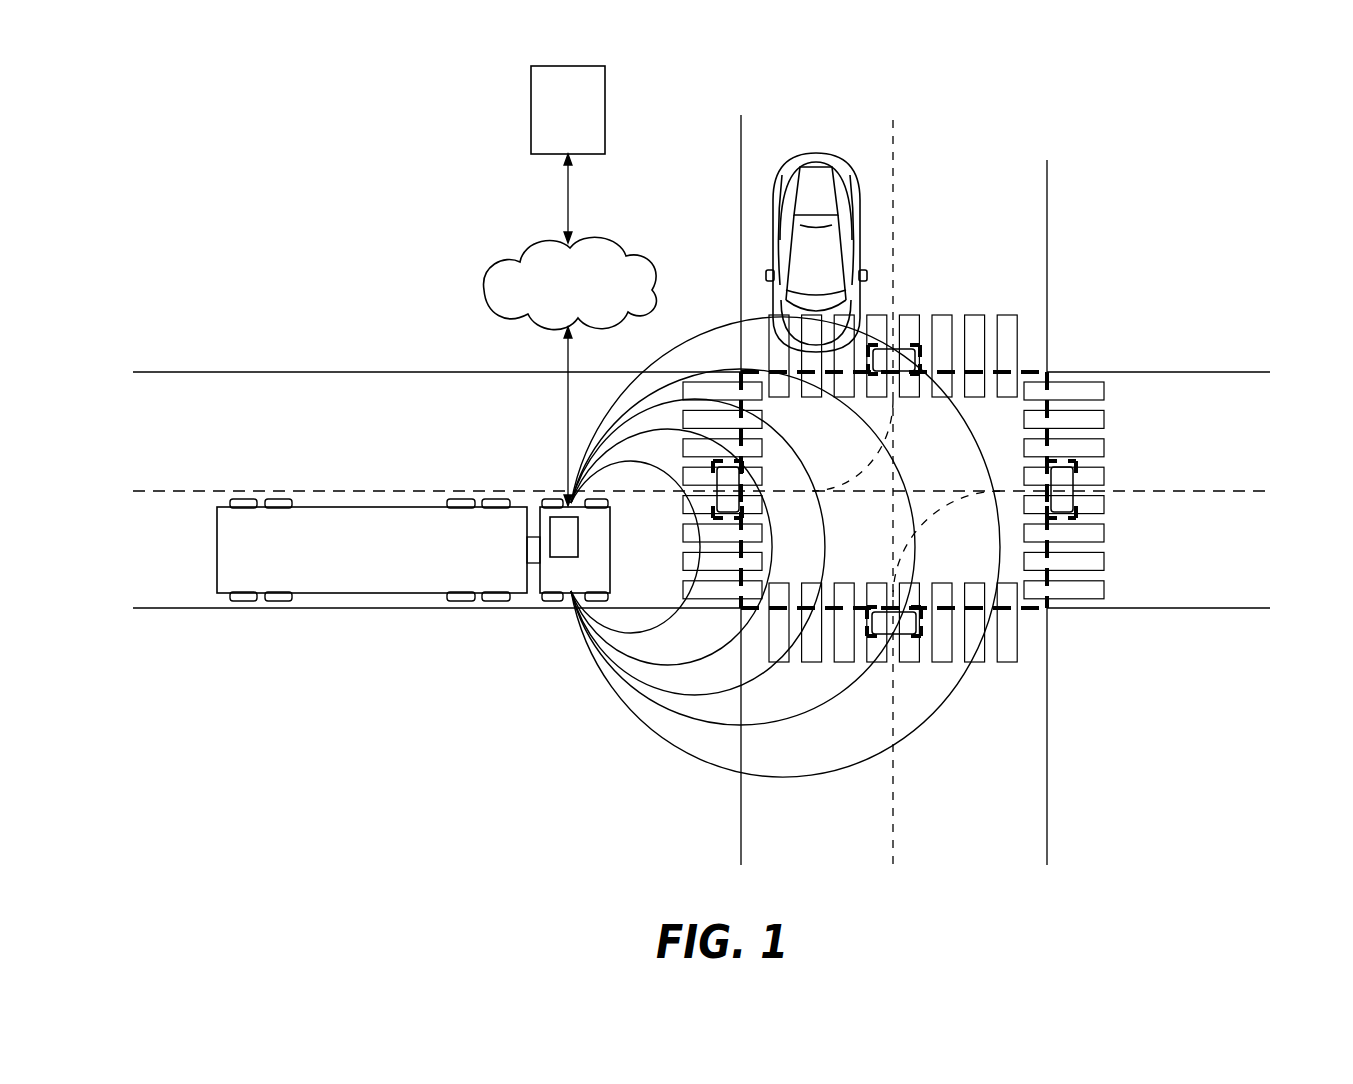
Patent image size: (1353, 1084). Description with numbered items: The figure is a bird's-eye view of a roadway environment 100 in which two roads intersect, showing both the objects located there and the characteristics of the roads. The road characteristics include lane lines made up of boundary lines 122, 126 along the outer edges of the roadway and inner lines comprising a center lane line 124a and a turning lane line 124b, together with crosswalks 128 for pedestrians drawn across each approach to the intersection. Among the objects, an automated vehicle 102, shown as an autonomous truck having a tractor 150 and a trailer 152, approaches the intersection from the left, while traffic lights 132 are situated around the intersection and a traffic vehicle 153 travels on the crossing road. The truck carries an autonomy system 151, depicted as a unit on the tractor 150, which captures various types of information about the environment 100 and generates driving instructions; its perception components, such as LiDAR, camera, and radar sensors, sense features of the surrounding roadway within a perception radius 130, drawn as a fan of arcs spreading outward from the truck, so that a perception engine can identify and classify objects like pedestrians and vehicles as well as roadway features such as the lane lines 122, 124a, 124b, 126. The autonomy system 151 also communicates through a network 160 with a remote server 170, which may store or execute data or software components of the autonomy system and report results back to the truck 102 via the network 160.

The roadway environment 100 is at (284, 205).
The automated vehicle 102 is at (457, 561).
The boundary line 122 is at (742, 137).
The center lane line 124a is at (893, 120).
The turning lane line 124b is at (948, 518).
The boundary line 126 is at (1150, 608).
The crosswalk 128 is at (1050, 392).
The perception radius 130 is at (664, 356).
The traffic light 132 is at (714, 500).
The tractor 150 is at (568, 602).
The autonomy system 151 is at (564, 514).
The trailer 152 is at (318, 596).
The traffic vehicle 153 is at (828, 155).
The network 160 is at (545, 296).
The remote server 170 is at (545, 118).